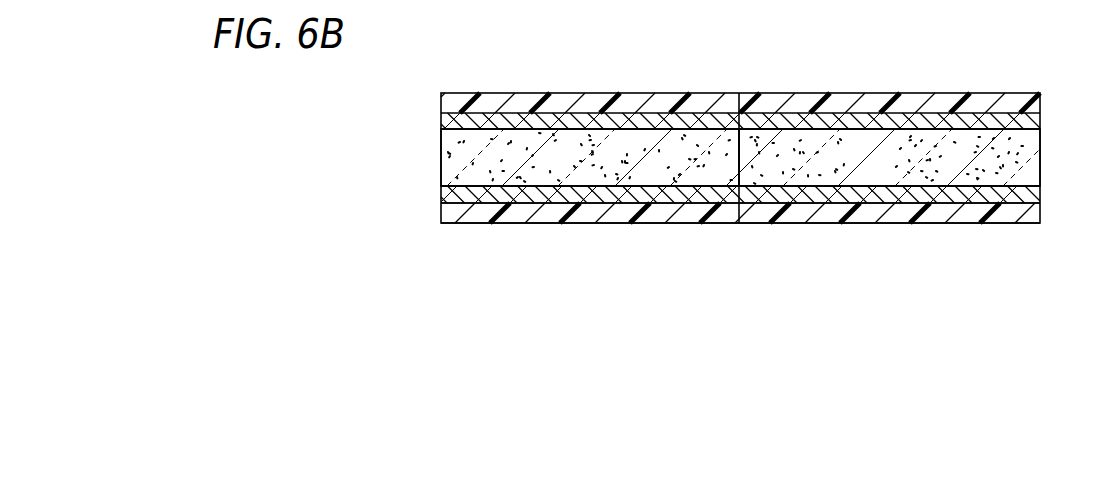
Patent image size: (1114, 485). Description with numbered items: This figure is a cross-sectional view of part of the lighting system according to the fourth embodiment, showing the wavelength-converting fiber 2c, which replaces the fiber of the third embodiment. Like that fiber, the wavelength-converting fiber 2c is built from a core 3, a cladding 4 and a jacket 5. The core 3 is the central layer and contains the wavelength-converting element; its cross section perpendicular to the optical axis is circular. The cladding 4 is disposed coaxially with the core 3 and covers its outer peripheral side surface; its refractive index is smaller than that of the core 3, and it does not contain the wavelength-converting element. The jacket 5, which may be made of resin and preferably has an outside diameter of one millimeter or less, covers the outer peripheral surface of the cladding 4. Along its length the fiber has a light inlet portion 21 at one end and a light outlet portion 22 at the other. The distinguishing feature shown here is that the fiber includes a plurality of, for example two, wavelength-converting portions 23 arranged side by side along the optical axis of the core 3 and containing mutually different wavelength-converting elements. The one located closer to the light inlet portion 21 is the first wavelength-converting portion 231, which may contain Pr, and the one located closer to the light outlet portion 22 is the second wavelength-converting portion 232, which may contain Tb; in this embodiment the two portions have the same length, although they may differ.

The wavelength-converting fiber 2c is at (1023, 88).
The core 3 is at (743, 156).
The cladding 4 is at (812, 195).
The jacket 5 is at (870, 212).
The light inlet portion 21 is at (441, 160).
The light outlet portion 22 is at (1041, 150).
The wavelength-converting portion 23 is at (743, 117).
The first wavelength-converting portion 231 is at (674, 155).
The second wavelength-converting portion 232 is at (907, 140).